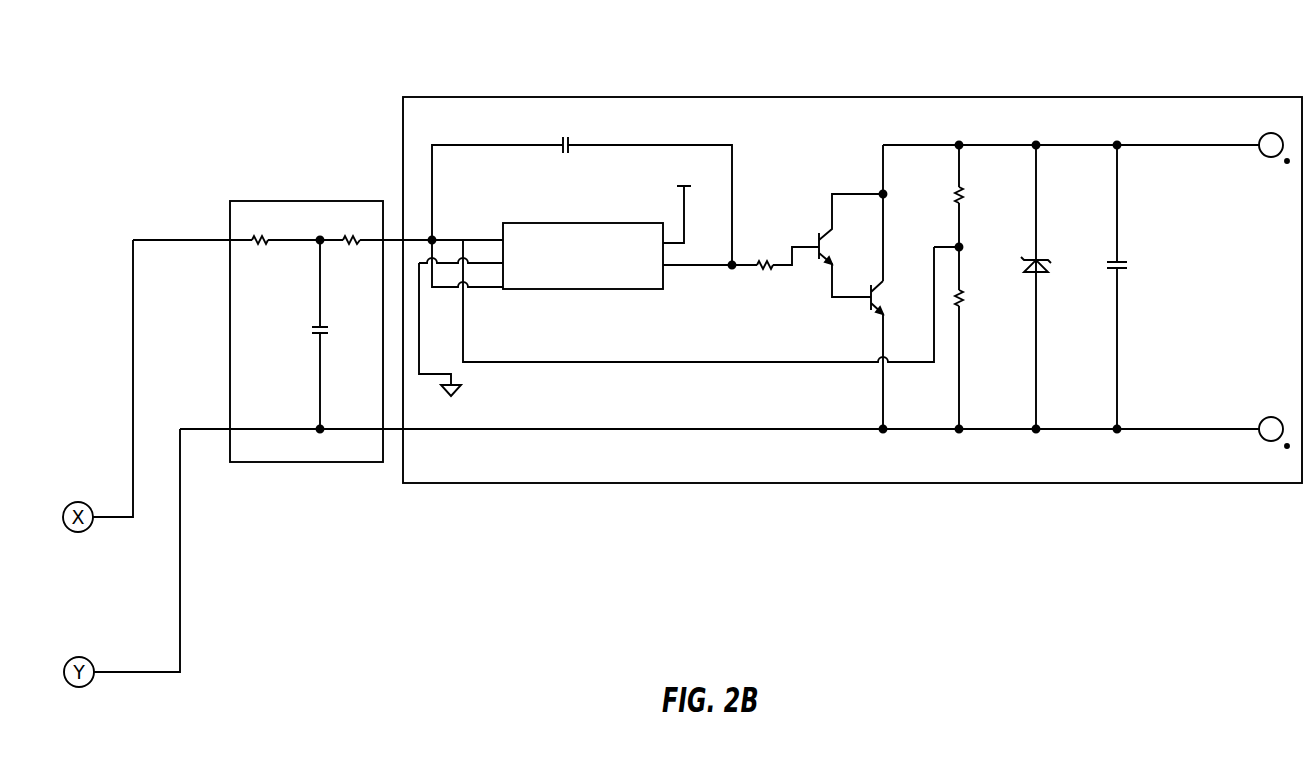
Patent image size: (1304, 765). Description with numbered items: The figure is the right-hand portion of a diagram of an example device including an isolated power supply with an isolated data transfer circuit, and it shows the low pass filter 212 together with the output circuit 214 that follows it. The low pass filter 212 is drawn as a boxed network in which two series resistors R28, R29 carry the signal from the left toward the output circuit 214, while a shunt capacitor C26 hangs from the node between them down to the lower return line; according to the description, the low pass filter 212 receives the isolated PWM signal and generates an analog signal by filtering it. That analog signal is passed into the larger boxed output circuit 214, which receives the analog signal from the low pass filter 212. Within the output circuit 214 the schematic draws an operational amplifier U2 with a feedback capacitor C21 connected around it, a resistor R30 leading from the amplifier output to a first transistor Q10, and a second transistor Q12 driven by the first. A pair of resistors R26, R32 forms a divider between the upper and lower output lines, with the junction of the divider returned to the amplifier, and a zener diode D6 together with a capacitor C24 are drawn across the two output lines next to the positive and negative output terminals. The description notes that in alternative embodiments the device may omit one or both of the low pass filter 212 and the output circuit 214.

The low pass filter 212 is at (317, 201).
The output circuit 214 is at (795, 97).
The resistor R28 is at (260, 238).
The resistor R29 is at (351, 238).
The capacitor C26 is at (289, 334).
The capacitor C21 is at (582, 187).
The operational amplifier U2 is at (582, 257).
The resistor R30 is at (765, 266).
The transistor Q10 is at (851, 245).
The transistor Q12 is at (899, 297).
The resistor R26 is at (984, 196).
The resistor R32 is at (984, 299).
The zener diode D6 is at (1050, 287).
The capacitor C24 is at (1145, 287).